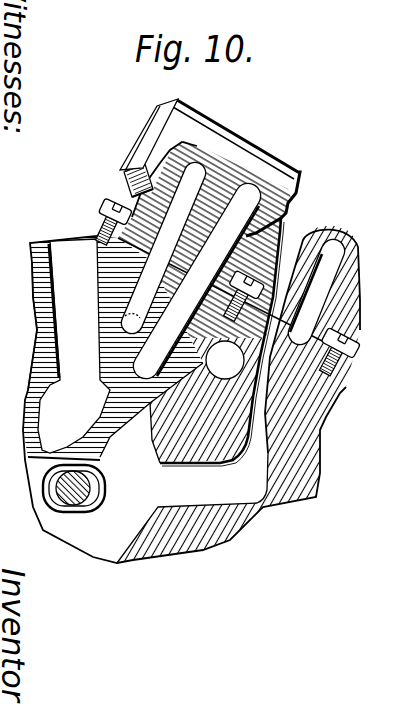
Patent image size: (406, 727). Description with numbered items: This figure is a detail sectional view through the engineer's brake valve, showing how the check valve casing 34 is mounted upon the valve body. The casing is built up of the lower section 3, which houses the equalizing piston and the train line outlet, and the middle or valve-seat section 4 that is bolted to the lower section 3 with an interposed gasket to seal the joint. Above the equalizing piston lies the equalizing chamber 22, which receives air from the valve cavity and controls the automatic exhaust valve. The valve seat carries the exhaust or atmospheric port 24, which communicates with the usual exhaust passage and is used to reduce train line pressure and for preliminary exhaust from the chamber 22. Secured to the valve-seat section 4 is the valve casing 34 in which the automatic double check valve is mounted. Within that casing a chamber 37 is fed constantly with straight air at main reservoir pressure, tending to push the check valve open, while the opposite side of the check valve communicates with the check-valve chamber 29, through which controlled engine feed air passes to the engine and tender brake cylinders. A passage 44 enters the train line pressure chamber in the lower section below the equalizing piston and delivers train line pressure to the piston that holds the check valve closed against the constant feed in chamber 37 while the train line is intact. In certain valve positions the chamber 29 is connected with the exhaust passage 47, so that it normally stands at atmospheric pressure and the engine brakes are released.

The lower section 3 is at (321, 462).
The valve-seat section 4 is at (37, 318).
The equalizing chamber 22 is at (91, 488).
The exhaust port 24 is at (100, 427).
The check-valve chamber 29 is at (255, 193).
The check valve casing 34 is at (253, 167).
The straight air chamber 37 is at (200, 167).
The train line pressure passage 44 is at (323, 270).
The exhaust passage 47 is at (60, 250).